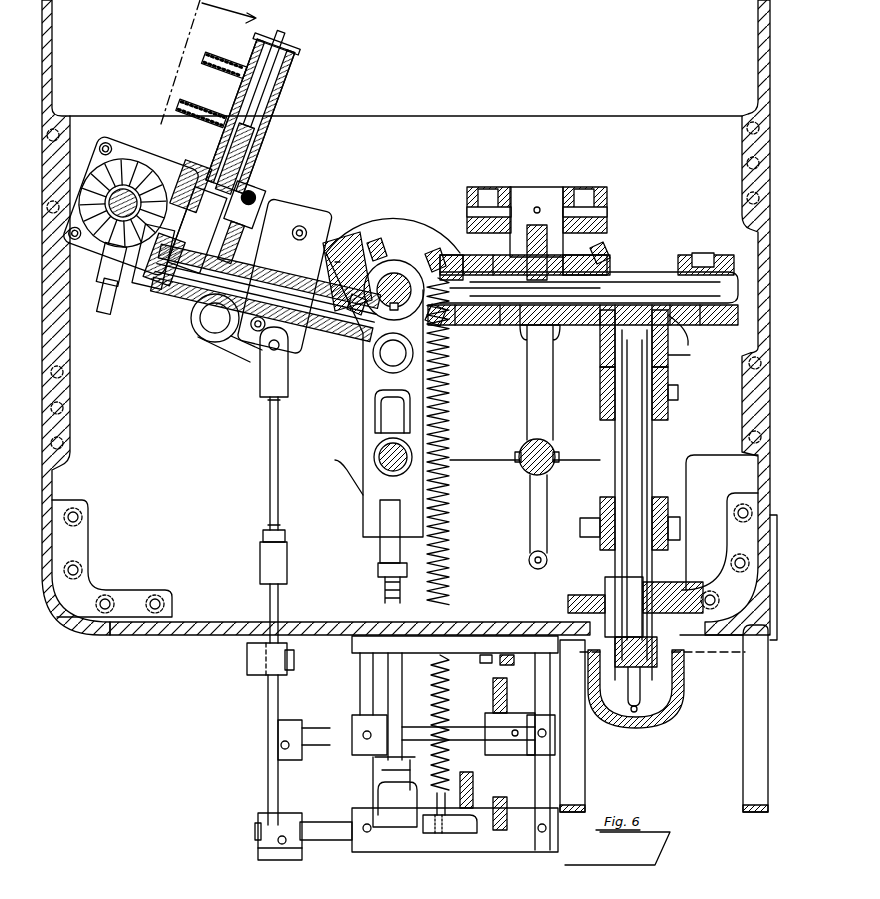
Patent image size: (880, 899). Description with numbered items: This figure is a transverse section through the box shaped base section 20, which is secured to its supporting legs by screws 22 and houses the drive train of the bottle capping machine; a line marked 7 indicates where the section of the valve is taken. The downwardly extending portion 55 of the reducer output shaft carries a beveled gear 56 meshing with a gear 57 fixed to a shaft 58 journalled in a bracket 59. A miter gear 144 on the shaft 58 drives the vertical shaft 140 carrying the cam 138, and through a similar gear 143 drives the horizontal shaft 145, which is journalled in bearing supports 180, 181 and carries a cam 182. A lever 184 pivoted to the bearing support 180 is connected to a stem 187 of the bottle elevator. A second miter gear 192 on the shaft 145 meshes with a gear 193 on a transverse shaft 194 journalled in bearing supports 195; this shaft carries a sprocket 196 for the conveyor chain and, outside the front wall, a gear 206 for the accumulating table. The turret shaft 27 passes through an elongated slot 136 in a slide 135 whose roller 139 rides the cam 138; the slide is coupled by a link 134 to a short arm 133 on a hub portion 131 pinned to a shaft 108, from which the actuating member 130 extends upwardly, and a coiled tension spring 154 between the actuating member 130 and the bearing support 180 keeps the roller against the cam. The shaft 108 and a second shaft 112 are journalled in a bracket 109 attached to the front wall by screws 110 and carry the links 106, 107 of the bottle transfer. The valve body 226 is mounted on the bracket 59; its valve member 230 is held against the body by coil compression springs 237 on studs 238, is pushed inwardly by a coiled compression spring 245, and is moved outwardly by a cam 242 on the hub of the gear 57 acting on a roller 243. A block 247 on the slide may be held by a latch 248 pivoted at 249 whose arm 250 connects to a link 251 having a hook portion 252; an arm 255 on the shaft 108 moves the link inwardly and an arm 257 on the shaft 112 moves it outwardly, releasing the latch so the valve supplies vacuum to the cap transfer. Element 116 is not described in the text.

The section line of FIG. 7 is at (214, 63).
The base section 20 is at (44, 430).
The screws 22 is at (78, 568).
The turret shaft 27 is at (382, 452).
The portion of the output shaft 55 is at (136, 194).
The beveled gear 56 is at (154, 226).
The gear 57 is at (140, 292).
The shaft 58 is at (340, 240).
The bracket 59 is at (285, 205).
The link 106 is at (506, 797).
The link 107 is at (508, 692).
The shaft 108 is at (326, 842).
The bracket 109 is at (357, 861).
The screws 110 is at (436, 662).
The shaft 112 is at (458, 728).
The contact 116 is at (506, 659).
The actuating member 130 is at (473, 780).
The hub portion 131 is at (447, 853).
The short arm 133 is at (400, 780).
The link 134 is at (395, 700).
The slide 135 is at (365, 508).
The elongated slot 136 is at (383, 418).
The cam 138 is at (379, 244).
The roller 139 is at (373, 351).
The shaft 140 is at (378, 282).
The gear 143 is at (448, 262).
The gear 144 is at (378, 240).
The shaft 145 is at (615, 272).
The coiled tension spring 154 is at (449, 414).
The bearing support 180 is at (503, 330).
The bearing support 181 is at (720, 255).
The cam 182 is at (545, 225).
The lever 184 is at (540, 178).
The stem 187 is at (555, 450).
The second miter gear 192 is at (598, 252).
The gear 193 is at (678, 340).
The shaft 194 is at (648, 452).
The bearing supports 195 is at (670, 405).
The sprocket 196 is at (605, 595).
The gear 206 is at (646, 689).
The valve body 226 is at (280, 95).
The valve member 230 is at (240, 96).
The coil compression springs 237 is at (225, 72).
The studs 238 is at (202, 52).
The cam 242 is at (195, 288).
The roller 243 is at (258, 154).
The coiled compression spring 245 is at (272, 42).
The block 247 is at (274, 163).
The latch 248 is at (272, 178).
The pivot 249 is at (210, 321).
The arm 250 is at (258, 352).
The link 251 is at (280, 428).
The hook portion 252 is at (267, 700).
The arm 255 is at (276, 800).
The arm 257 is at (281, 720).